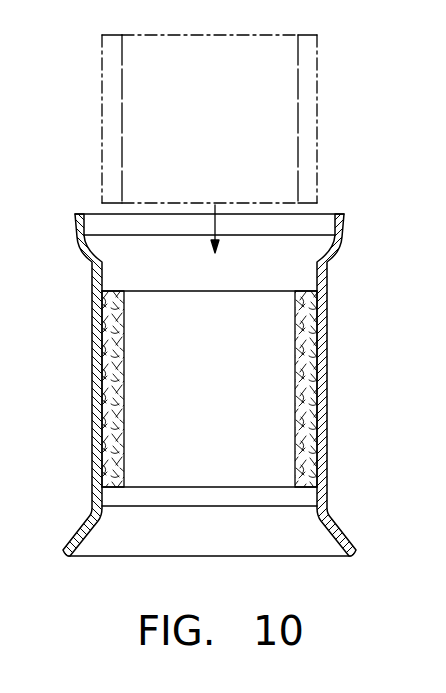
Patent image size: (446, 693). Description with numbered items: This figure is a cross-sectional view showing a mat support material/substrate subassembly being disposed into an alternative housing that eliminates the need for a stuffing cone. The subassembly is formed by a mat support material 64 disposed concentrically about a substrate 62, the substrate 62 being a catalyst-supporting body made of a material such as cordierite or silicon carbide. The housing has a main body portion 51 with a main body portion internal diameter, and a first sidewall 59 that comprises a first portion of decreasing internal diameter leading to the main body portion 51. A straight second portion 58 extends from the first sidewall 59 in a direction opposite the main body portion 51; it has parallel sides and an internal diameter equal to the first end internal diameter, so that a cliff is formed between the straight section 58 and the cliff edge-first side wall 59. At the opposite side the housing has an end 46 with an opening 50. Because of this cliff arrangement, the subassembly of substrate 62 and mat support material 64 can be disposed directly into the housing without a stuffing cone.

The end 46 is at (360, 529).
The opening 50 is at (117, 557).
The main body portion 51 is at (78, 298).
The second portion 58 is at (43, 222).
The first sidewall 59 is at (56, 262).
The substrate 62 is at (226, 90).
The mat support material 64 is at (311, 348).